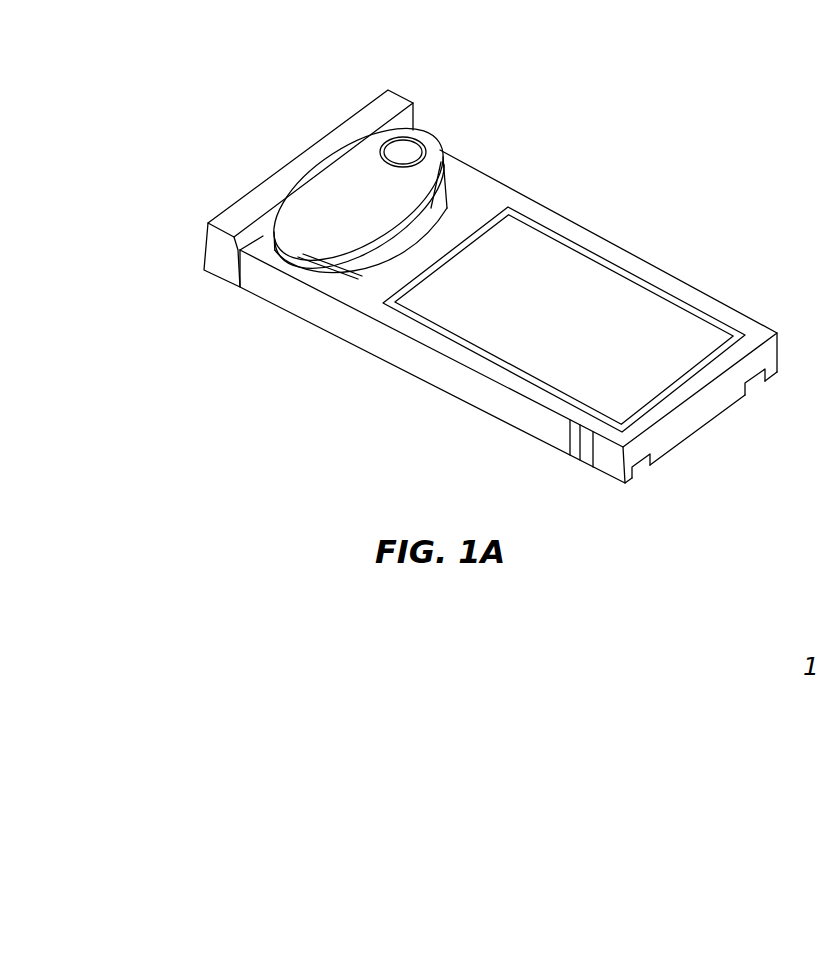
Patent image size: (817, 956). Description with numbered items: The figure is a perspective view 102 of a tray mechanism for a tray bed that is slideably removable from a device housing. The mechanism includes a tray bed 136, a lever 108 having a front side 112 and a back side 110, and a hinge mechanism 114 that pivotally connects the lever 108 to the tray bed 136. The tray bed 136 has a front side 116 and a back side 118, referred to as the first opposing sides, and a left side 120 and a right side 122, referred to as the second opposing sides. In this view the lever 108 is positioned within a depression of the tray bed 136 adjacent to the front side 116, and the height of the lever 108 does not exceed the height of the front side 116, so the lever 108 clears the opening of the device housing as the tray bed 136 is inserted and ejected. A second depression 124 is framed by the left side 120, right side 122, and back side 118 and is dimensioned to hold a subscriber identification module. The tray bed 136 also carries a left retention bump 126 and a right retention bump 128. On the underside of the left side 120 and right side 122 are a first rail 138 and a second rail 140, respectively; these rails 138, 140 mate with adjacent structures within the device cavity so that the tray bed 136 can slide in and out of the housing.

The tray mechanism perspective view 102 is at (374, 457).
The lever 108 is at (355, 182).
The back side of lever 110 is at (382, 228).
The front side of lever 112 is at (357, 150).
The hinge mechanism 114 is at (413, 147).
The front side of tray bed 116 is at (278, 168).
The back side of tray bed 118 is at (687, 393).
The left side of tray bed 120 is at (492, 373).
The right side of tray bed 122 is at (677, 287).
The second depression 124 is at (583, 303).
The left retention bump 126 is at (571, 452).
The right retention bump 128 is at (735, 308).
The tray bed 136 is at (470, 210).
The first rail 138 is at (642, 461).
The second rail 140 is at (765, 375).